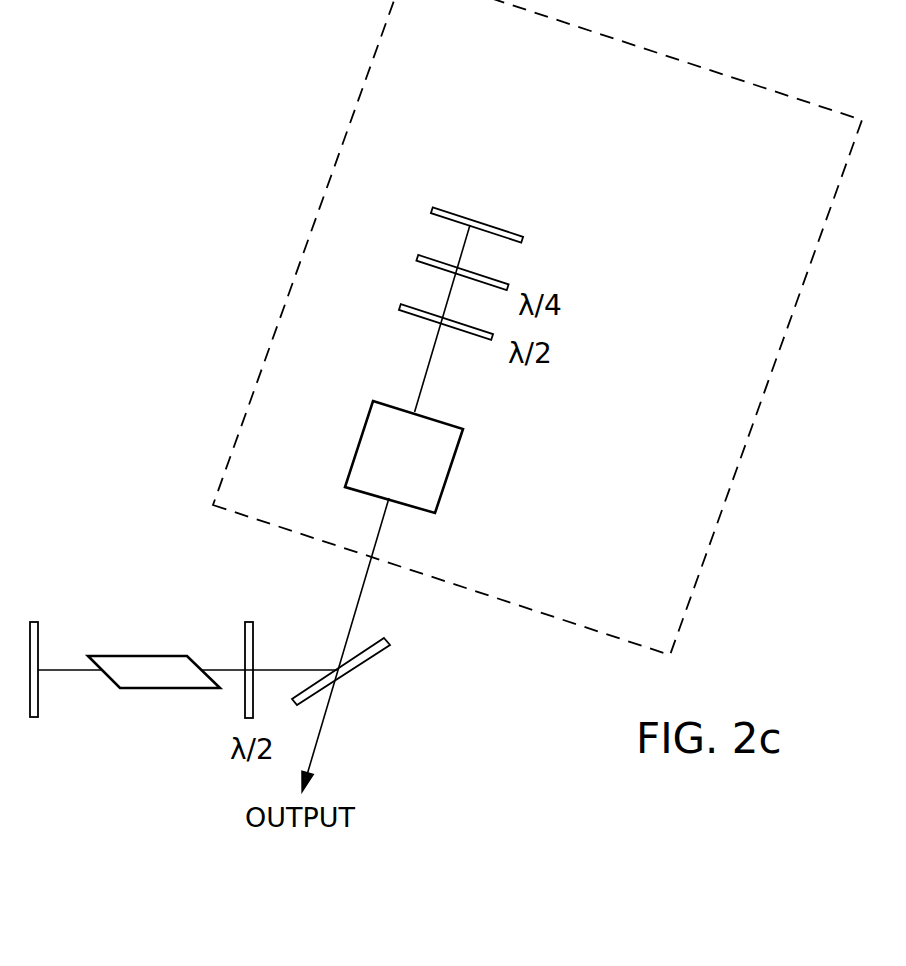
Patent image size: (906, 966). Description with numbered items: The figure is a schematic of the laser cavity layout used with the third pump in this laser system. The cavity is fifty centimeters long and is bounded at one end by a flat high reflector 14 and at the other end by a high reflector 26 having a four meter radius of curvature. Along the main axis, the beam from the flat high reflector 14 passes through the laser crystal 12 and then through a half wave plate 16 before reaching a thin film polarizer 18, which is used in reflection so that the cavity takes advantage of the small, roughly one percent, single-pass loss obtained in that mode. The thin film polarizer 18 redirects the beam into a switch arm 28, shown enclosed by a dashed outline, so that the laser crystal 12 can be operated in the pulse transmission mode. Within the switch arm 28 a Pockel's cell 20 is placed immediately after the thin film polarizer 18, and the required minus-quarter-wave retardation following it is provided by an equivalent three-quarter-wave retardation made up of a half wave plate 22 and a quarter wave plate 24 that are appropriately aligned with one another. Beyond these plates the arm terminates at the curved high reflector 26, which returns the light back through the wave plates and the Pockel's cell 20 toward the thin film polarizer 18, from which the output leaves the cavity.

The laser crystal 12 is at (158, 677).
The flat high reflector 14 is at (34, 717).
The half-wave plate 16 is at (249, 622).
The thin film polarizer 18 is at (387, 640).
The Pockel's cell 20 is at (443, 470).
The half wave plate 22 is at (400, 310).
The quarter wave plate 24 is at (417, 258).
The high reflector 26 is at (498, 226).
The switch arm 28 is at (816, 249).